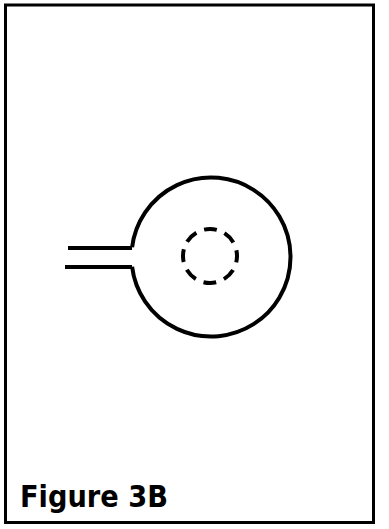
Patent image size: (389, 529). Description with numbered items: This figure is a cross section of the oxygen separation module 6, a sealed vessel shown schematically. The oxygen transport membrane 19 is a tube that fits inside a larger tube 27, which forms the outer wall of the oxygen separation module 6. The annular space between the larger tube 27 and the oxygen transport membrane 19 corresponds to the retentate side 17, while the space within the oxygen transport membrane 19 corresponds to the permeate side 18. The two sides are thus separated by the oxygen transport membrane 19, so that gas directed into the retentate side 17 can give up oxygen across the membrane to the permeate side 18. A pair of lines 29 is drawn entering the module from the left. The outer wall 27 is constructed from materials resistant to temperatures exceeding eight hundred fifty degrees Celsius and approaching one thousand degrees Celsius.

The oxygen separation module 6 is at (103, 290).
The retentate side 17 is at (153, 258).
The permeate side 18 is at (208, 256).
The oxygen transport membrane 19 is at (236, 248).
The larger tube 27 is at (250, 184).
The conduit lines 29 is at (98, 241).